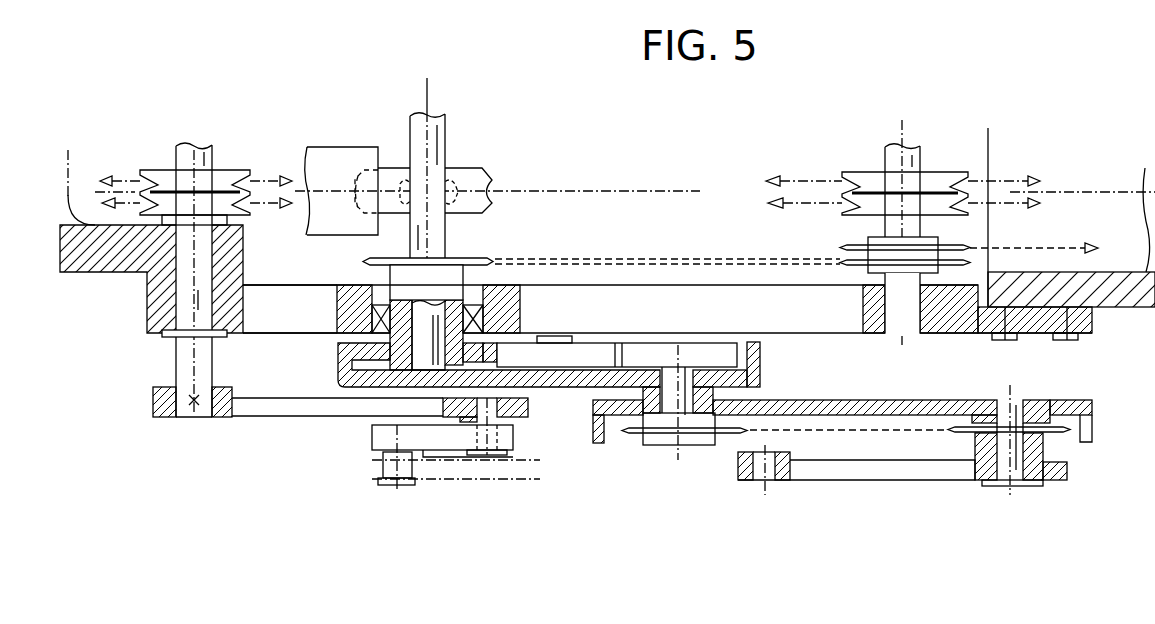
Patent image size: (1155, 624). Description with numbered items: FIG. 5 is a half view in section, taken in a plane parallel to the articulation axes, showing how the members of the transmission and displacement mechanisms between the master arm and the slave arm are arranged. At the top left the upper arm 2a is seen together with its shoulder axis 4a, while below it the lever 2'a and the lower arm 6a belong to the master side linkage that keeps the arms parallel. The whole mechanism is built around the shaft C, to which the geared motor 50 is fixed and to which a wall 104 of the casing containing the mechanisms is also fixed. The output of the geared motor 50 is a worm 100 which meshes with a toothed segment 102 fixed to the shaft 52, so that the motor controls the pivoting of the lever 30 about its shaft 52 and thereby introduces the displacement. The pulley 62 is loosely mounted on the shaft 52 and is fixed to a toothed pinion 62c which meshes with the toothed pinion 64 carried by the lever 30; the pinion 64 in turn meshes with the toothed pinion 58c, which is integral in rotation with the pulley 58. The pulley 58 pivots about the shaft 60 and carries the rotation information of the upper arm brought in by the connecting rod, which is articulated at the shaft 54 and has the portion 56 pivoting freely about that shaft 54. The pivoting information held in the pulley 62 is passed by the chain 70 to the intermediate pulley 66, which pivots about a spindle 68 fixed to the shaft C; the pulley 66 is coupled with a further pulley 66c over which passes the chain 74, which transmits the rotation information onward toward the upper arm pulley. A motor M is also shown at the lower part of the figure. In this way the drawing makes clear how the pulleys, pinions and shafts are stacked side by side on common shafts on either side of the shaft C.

The upper arm (master side) 2a is at (118, 272).
The wall of casing F 104 is at (305, 322).
The shoulder axis (master side) 4a is at (205, 157).
The geared motor 50 is at (332, 153).
The toothed segment 102 is at (494, 186).
The worm 100 is at (447, 172).
The shaft 52 is at (425, 243).
The pulley (wheel) 62 is at (468, 259).
The chain 70 is at (622, 263).
The lever 30 is at (548, 380).
The toothed pinion 62c is at (485, 352).
The toothed pinion (transmission gear) 64 is at (602, 350).
The shaft 60 is at (668, 372).
The wheel (pulley) 58 is at (637, 434).
The toothed pinion 58c is at (727, 350).
The portion (toothed pulley) 56 is at (1057, 433).
The shaft (articulation) 54 is at (1000, 466).
The motor M is at (397, 464).
The lower arm 6a is at (452, 440).
The lever 2'a is at (337, 430).
The spindle 68 is at (893, 160).
The intermediate pulley 66 is at (858, 262).
The pulley 66c is at (852, 247).
The chain (chain system) 74 is at (1046, 248).
The shaft C is at (1100, 306).